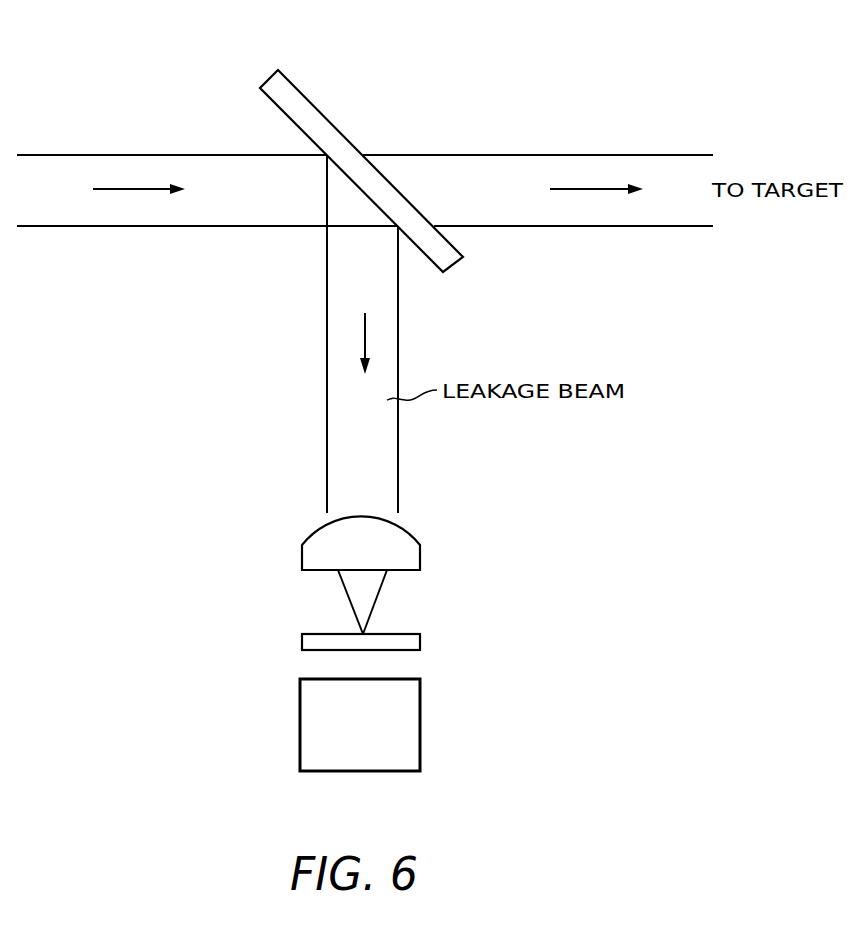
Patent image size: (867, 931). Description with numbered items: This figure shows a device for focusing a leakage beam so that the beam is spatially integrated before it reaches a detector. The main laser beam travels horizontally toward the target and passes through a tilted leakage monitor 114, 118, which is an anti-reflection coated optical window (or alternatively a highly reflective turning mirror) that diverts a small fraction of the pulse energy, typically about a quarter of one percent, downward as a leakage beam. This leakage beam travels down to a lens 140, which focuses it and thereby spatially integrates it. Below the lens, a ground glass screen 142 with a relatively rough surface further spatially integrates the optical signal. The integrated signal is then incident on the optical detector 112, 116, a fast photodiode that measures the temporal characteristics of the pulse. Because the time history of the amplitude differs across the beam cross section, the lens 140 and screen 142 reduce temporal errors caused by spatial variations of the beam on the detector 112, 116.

The first leakage monitor 114 is at (361, 149).
The second leakage monitor 118 is at (308, 98).
The lens 140 is at (418, 540).
The ground glass screen 142 is at (422, 643).
The first optical detector 112 is at (417, 714).
The second optical detector 116 is at (420, 693).